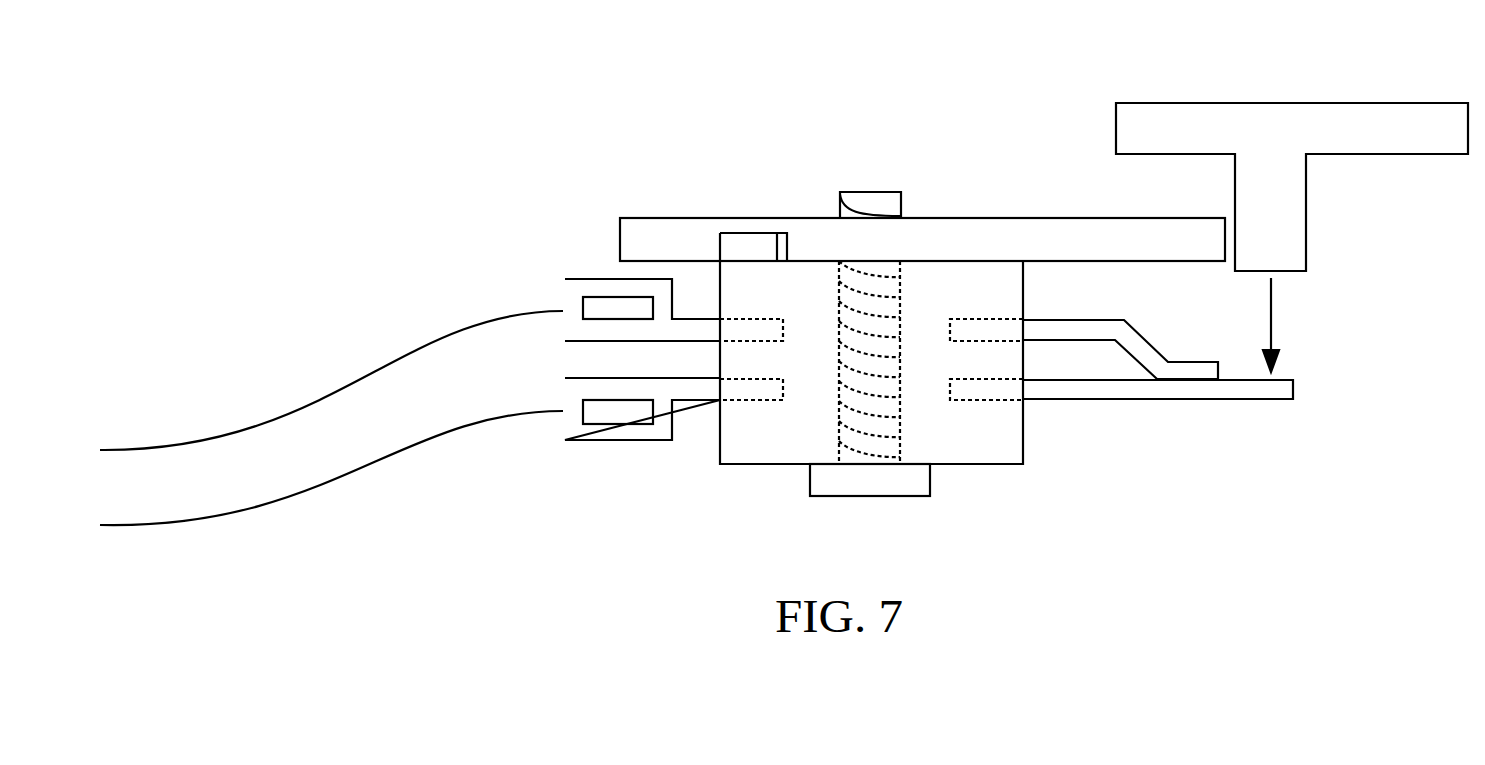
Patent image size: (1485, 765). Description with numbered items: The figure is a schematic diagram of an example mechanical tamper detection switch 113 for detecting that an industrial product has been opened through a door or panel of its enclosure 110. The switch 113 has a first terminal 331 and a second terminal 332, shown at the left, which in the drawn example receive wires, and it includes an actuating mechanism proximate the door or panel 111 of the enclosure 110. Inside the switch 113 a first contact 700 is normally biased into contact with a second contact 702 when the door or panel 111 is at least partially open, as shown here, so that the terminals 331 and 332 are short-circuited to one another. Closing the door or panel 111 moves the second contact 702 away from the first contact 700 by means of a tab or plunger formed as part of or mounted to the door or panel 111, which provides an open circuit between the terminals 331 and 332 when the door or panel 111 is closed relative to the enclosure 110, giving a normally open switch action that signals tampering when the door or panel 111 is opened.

The detection switch 113 is at (430, 94).
The enclosure 110 is at (669, 217).
The door or panel 111 is at (1156, 103).
The first terminal 331 is at (409, 352).
The second terminal 332 is at (437, 455).
The first contact 700 is at (1101, 319).
The second contact 702 is at (1251, 400).